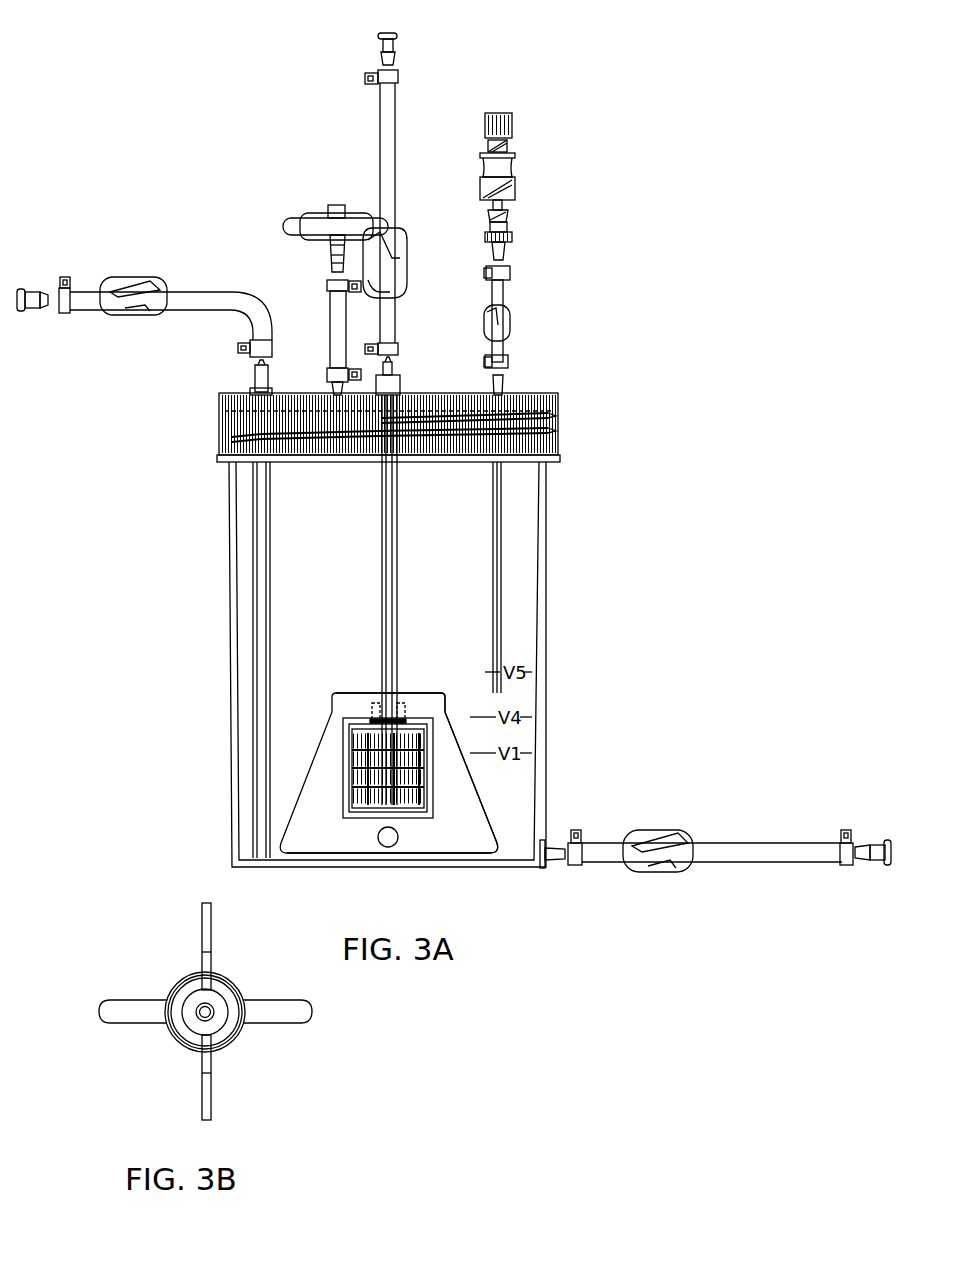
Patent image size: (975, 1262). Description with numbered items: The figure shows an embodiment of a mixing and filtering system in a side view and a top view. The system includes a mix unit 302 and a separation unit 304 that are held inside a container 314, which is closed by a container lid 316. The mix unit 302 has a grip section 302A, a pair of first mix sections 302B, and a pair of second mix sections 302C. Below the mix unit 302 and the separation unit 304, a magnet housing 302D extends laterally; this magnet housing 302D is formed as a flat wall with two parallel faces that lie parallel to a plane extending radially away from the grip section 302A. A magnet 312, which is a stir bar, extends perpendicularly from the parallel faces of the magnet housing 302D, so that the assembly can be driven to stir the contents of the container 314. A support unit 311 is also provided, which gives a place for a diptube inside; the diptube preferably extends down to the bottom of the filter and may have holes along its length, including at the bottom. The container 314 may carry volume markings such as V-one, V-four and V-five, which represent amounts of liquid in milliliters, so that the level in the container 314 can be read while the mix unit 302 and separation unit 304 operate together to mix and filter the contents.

In FIG. 3A, the mix unit 302 is at (457, 798).
In FIG. 3B, the mix unit 302 is at (212, 935).
In FIG. 3A, the grip section 302A is at (403, 698).
In FIG. 3A, the pair of first mix sections 302B is at (437, 703).
In FIG. 3A, the pair of second mix sections 302C is at (455, 770).
In FIG. 3A, the magnet housing 302D is at (428, 823).
In FIG. 3A, the separation unit 304 is at (348, 737).
In FIG. 3B, the separation unit 304 is at (176, 1043).
In FIG. 3A, the support unit 311 is at (397, 530).
In FIG. 3B, the support unit 311 is at (203, 1008).
In FIG. 3A, the magnet 312 is at (388, 847).
In FIG. 3B, the magnet 312 is at (276, 1015).
In FIG. 3A, the container 314 is at (540, 566).
In FIG. 3A, the container lid 316 is at (558, 415).